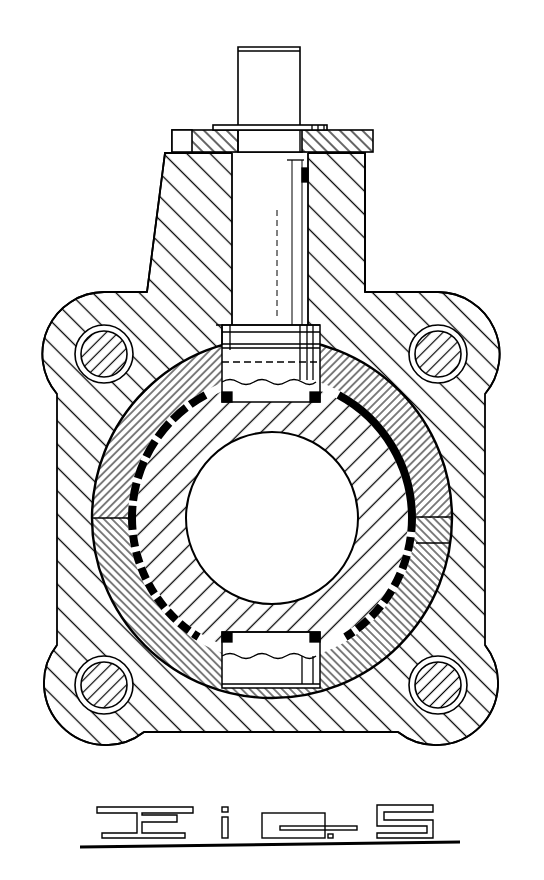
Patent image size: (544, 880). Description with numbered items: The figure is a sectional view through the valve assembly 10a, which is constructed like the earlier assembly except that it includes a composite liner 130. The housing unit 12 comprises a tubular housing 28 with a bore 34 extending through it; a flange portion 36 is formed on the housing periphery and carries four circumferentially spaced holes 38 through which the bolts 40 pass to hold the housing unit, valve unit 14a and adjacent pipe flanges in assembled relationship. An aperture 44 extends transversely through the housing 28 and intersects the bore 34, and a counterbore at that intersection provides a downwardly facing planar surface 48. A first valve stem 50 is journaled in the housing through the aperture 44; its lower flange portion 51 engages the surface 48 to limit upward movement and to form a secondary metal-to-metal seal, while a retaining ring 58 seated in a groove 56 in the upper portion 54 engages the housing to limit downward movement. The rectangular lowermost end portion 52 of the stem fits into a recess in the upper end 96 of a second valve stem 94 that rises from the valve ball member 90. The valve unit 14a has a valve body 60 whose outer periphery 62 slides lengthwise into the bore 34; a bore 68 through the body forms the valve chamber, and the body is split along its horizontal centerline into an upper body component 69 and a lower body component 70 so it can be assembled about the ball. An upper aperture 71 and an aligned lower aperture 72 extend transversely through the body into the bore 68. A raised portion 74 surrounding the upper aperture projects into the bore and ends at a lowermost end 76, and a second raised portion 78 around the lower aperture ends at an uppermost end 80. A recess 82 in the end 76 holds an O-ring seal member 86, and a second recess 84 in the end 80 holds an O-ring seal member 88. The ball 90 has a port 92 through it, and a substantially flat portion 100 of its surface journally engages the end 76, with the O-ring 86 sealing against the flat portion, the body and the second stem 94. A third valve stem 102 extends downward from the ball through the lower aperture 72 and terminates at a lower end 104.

The valve assembly 10a is at (323, 85).
The housing unit 12 is at (366, 201).
The valve unit 14a is at (353, 348).
The tubular housing 28 is at (350, 230).
The bore 34 is at (192, 694).
The flange portion 36 is at (87, 307).
The holes 38 is at (112, 325).
The bolts 40 is at (88, 357).
The aperture 44 is at (306, 180).
The downwardly facing planar surface 48 is at (232, 334).
The first valve stem 50 is at (338, 130).
The lower flange portion 51 is at (270, 334).
The lowermost end portion 52 is at (277, 392).
The upper portion 54 is at (292, 66).
The groove 56 is at (279, 127).
The retaining ring 58 is at (227, 127).
The valve body 60 is at (350, 677).
The outer periphery 62 is at (110, 610).
The bore 68 is at (170, 622).
The upper body component 69 is at (100, 473).
The lower body component 70 is at (100, 547).
The upper aperture 71 is at (246, 393).
The lower aperture 72 is at (223, 672).
The raised portion 74 is at (213, 410).
The lowermost end 76 is at (345, 410).
The second raised portion 78 is at (207, 648).
The uppermost end 80 is at (212, 633).
The recess 82 is at (226, 389).
The second recess 84 is at (330, 640).
The O-ring seal member 86 is at (332, 403).
The O-ring seal member 88 is at (226, 640).
The valve ball member 90 is at (165, 525).
The port 92 is at (200, 477).
The second valve stem 94 is at (313, 362).
The upper end 96 is at (221, 333).
The flat portion 100 is at (313, 404).
The third valve stem 102 is at (272, 678).
The lower end 104 is at (260, 693).
The composite liner 130 is at (430, 541).